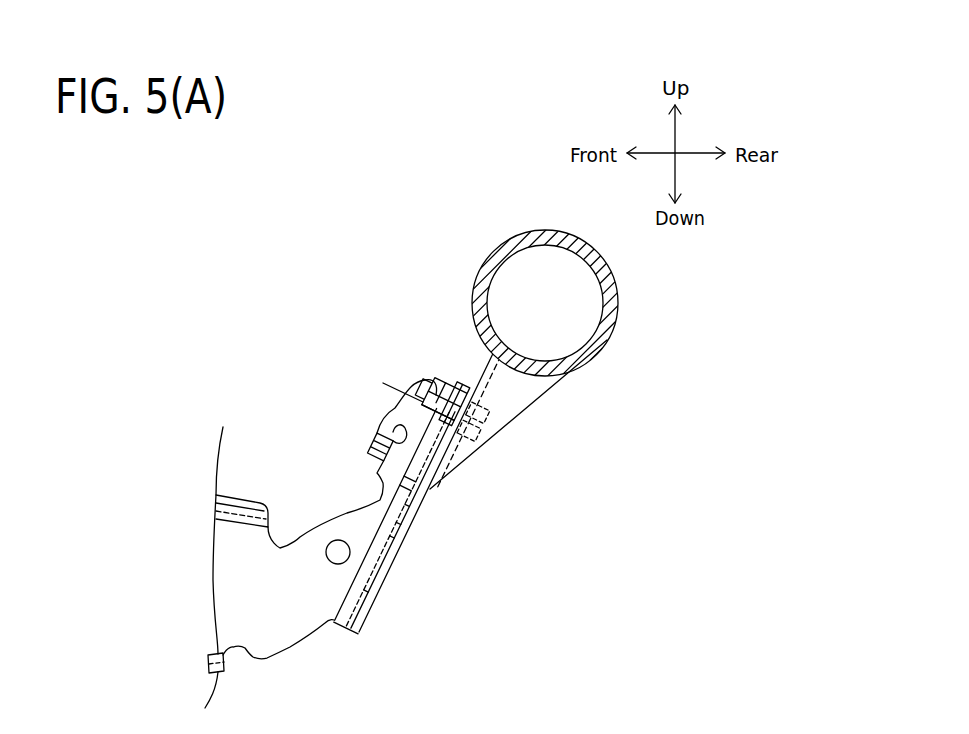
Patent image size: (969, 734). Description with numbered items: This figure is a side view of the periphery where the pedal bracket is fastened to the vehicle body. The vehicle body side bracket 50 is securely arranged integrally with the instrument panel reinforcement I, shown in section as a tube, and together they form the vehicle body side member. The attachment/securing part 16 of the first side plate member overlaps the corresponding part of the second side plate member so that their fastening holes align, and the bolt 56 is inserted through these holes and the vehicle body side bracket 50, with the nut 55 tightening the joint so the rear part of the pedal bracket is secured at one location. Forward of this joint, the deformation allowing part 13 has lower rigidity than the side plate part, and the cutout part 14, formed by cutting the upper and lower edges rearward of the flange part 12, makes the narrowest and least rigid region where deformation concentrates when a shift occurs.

The flange part 12 is at (248, 495).
The deformation allowing part 13 is at (307, 599).
The cutout part 14 is at (286, 524).
The attachment/securing part 16 is at (394, 558).
The vehicle body side bracket 50 is at (520, 413).
The nut 55 is at (428, 398).
The bolt 56 is at (471, 437).
The instrument panel reinforcement I is at (607, 256).